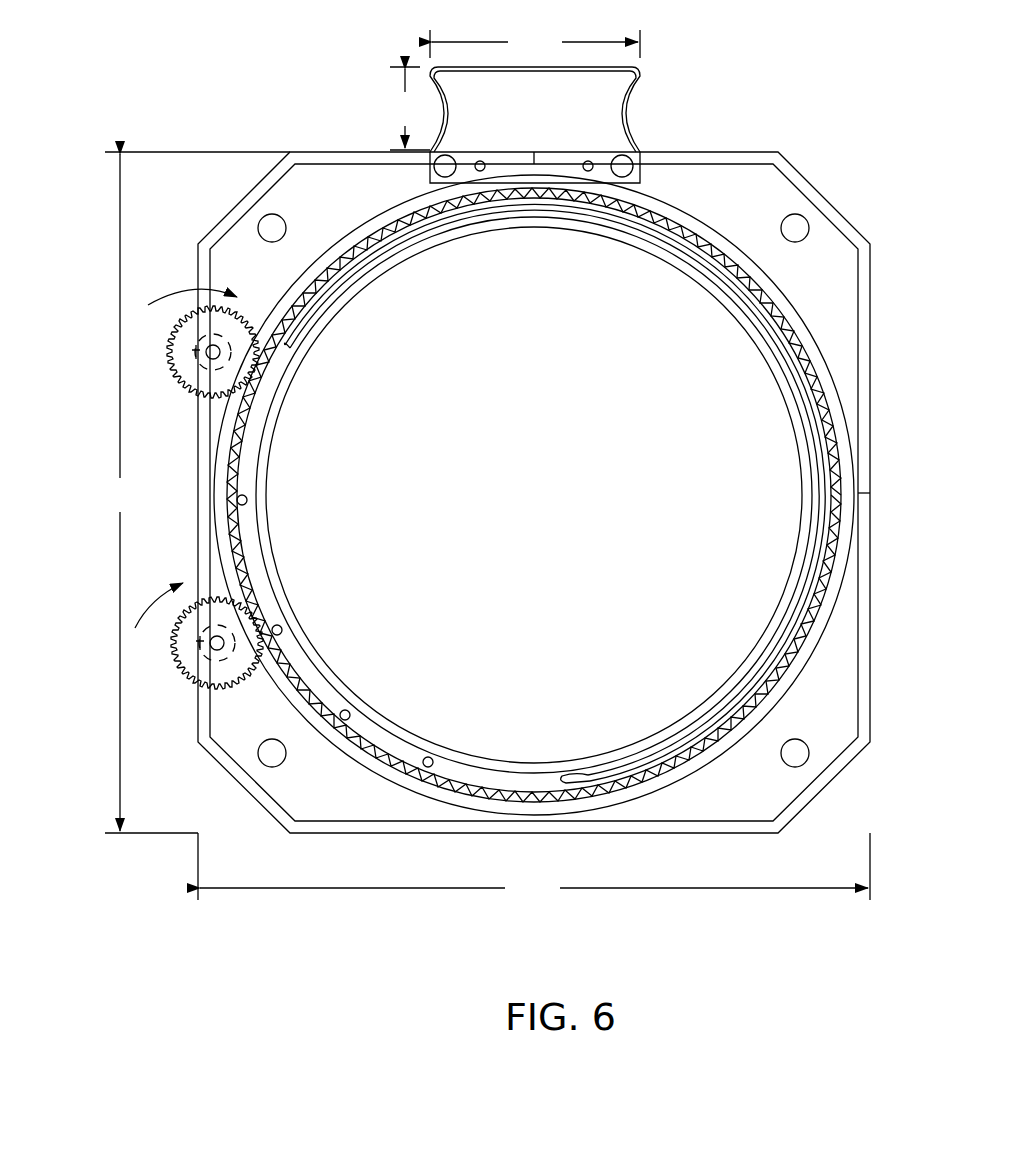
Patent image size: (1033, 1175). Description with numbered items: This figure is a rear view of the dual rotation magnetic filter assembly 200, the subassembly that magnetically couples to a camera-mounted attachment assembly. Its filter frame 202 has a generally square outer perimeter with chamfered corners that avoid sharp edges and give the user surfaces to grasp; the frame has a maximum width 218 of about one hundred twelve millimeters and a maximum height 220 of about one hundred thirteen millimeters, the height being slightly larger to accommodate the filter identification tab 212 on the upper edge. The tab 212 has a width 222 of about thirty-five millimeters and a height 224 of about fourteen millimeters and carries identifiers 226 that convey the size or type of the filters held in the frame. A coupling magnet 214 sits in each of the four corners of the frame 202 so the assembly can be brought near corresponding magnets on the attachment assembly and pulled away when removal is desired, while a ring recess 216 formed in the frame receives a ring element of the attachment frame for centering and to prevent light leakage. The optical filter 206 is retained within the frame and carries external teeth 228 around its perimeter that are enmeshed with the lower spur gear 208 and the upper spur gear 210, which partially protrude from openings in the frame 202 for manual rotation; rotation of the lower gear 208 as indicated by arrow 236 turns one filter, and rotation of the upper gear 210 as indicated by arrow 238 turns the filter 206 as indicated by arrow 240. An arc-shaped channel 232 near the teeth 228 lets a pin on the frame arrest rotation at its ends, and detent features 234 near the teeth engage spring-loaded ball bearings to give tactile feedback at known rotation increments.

The magnetic filter assembly 200 is at (183, 90).
The filter frame 202 is at (734, 150).
The second optical filter 206 is at (820, 512).
The lower spur gear 208 is at (178, 640).
The upper spur gear 210 is at (185, 380).
The filter identification tab 212 is at (628, 112).
The coupling magnets 214 is at (270, 228).
The ring recess 216 is at (830, 360).
The maximum width 218 is at (534, 867).
The maximum height 220 is at (196, 492).
The tab width 222 is at (535, 44).
The tab height 224 is at (408, 108).
The identifiers 226 is at (602, 95).
The external teeth 228 is at (277, 297).
The arc-shaped channel 232 is at (338, 237).
The detent features 234 is at (238, 502).
The arrow 236 is at (135, 630).
The arrow 238 is at (160, 308).
The arrow 240 is at (297, 266).